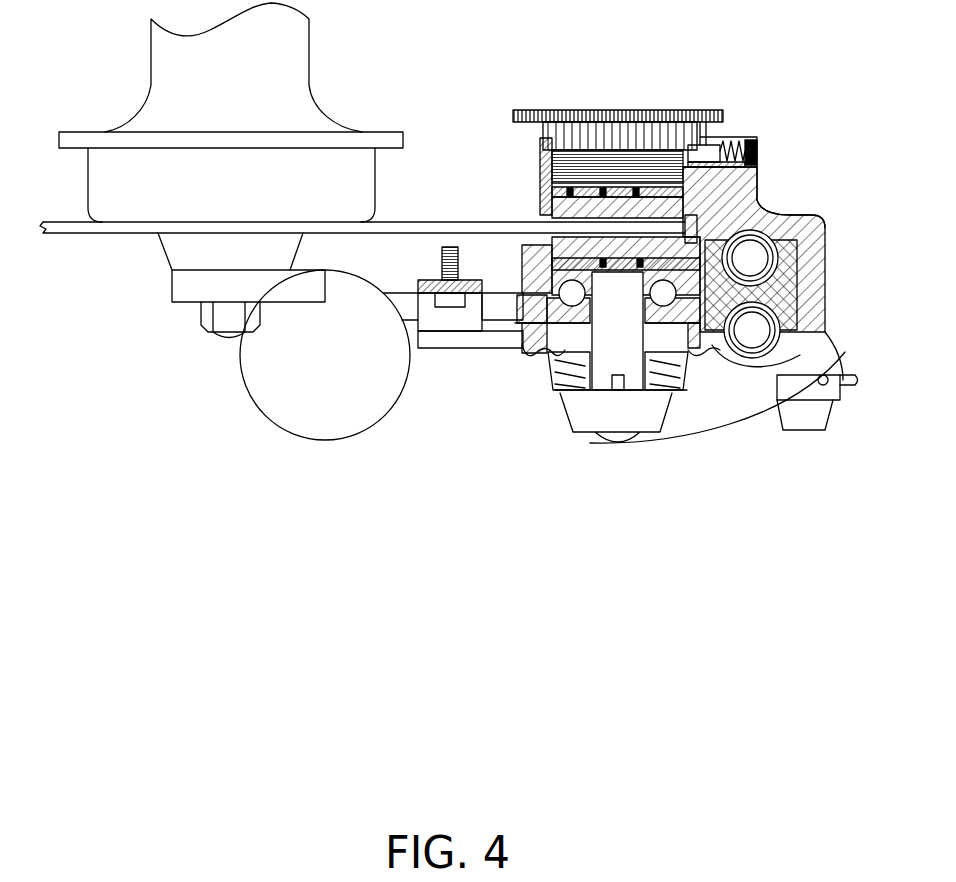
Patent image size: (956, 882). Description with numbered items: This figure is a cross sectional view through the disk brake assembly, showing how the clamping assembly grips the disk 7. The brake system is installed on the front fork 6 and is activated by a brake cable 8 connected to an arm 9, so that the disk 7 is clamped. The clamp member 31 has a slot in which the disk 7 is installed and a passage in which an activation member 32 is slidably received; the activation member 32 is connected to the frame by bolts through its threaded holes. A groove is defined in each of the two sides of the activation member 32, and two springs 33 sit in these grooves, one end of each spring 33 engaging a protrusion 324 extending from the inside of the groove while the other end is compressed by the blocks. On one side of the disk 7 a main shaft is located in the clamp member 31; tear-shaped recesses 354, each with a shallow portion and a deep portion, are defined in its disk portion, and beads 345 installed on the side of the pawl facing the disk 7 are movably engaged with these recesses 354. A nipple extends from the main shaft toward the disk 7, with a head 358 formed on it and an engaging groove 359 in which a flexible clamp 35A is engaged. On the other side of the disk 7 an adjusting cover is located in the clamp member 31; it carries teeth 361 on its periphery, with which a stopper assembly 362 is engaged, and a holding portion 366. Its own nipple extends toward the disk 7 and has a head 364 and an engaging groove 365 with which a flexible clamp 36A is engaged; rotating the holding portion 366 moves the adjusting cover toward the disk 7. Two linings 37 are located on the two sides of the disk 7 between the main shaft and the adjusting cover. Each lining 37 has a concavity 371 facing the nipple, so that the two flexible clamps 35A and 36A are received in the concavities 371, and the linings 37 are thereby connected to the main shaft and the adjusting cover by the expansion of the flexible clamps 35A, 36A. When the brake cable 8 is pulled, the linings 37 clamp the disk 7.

The front fork 6 is at (130, 187).
The disk 7 is at (435, 233).
The brake cable 8 is at (845, 410).
The arm 9 is at (675, 415).
The clamp member 31 is at (812, 305).
The activation member 32 is at (770, 290).
The springs 33 is at (780, 343).
The protrusion 324 is at (752, 258).
The beads 345 is at (570, 393).
The tear-shaped recesses 354 is at (605, 282).
The head 358 is at (745, 226).
The engaging groove 359 is at (620, 275).
The teeth 361 is at (700, 138).
The stopper assembly 362 is at (745, 136).
The head 364 is at (780, 172).
The engaging groove 365 is at (620, 180).
The holding portion 366 is at (608, 116).
The flexible clamp 36A is at (545, 187).
The linings 37 is at (545, 248).
The concavity 371 is at (585, 212).
The flexible clamp 35A is at (535, 345).